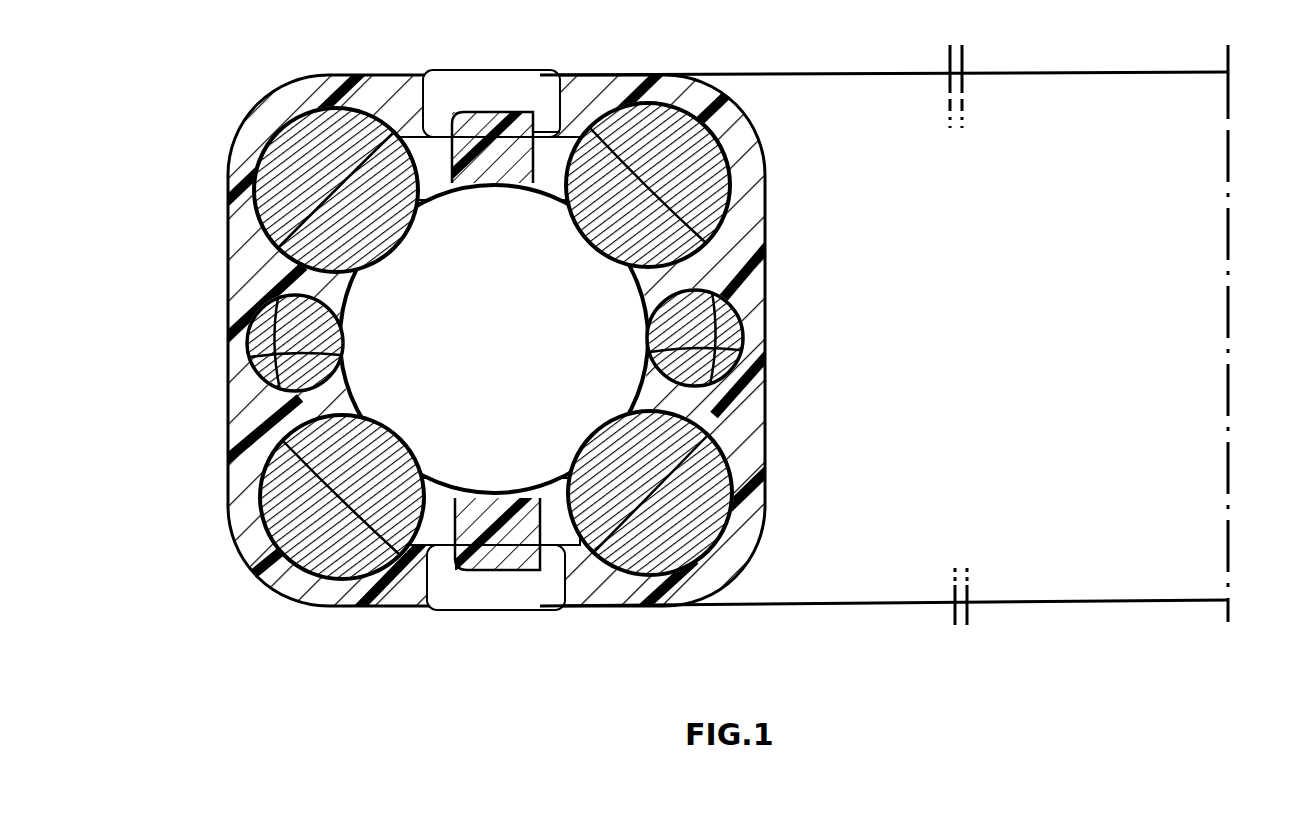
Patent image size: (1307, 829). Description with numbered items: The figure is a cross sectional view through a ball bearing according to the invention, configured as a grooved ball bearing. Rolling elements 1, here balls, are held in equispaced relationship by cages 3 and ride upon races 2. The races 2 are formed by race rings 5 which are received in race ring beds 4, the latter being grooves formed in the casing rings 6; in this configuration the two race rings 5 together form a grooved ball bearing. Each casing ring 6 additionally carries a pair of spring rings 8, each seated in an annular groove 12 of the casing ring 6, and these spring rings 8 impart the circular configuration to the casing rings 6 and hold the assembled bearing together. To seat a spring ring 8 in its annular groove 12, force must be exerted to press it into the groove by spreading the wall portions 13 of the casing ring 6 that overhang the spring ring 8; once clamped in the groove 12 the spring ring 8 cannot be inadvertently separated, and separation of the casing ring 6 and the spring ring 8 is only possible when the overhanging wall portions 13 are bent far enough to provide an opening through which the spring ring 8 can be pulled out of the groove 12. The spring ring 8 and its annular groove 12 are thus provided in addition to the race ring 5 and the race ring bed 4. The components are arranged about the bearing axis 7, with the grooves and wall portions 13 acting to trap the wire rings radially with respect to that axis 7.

The rolling element 1 is at (481, 363).
The race 2 is at (345, 355).
The cage 3 is at (515, 116).
The race ring bed 4 is at (343, 368).
The race ring 5 is at (290, 322).
The casing ring 6 is at (228, 417).
The bearing axis 7 is at (1233, 335).
The spring ring 8 is at (278, 198).
The annular groove 12 is at (398, 205).
The wall portion 13 is at (383, 92).